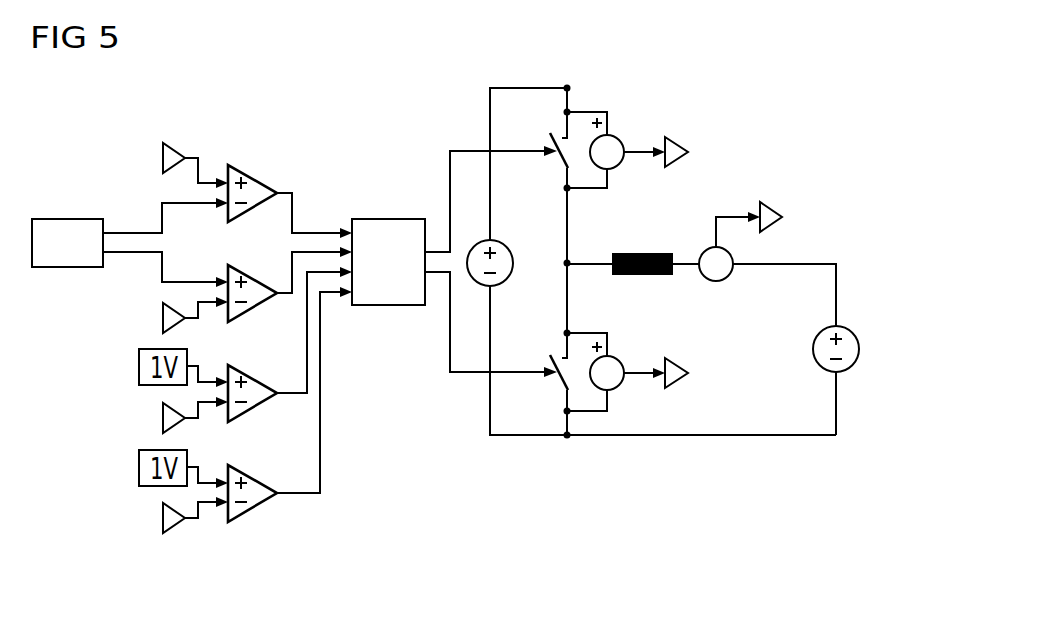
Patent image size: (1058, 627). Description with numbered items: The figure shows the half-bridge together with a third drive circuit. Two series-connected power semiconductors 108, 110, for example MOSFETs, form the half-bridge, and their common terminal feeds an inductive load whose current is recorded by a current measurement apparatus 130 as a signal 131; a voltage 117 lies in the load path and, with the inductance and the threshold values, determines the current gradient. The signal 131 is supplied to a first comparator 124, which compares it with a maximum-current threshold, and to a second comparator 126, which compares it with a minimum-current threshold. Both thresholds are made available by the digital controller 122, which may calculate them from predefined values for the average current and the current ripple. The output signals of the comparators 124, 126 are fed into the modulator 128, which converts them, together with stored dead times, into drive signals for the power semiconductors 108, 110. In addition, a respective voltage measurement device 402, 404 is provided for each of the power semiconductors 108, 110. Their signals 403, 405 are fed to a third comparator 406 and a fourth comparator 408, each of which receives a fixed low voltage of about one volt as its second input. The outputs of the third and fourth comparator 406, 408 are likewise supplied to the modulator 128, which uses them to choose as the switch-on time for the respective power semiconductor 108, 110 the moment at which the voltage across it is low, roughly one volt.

The digital controller 122 is at (68, 219).
The signal for the measured current 131 is at (178, 143).
The first comparator 124 is at (257, 173).
The second comparator 126 is at (250, 308).
The modulator 128 is at (387, 219).
The third comparator 406 is at (253, 375).
The fourth comparator 408 is at (253, 521).
The signal from the voltage measurement device 403 is at (163, 418).
The signal from the voltage measurement device 405 is at (179, 530).
The voltage measurement device 402 is at (613, 138).
The voltage measurement device 404 is at (615, 358).
The power semiconductor 108 is at (570, 157).
The power semiconductor 110 is at (570, 378).
The current measurement apparatus 130 is at (722, 280).
The voltage 117 is at (859, 355).